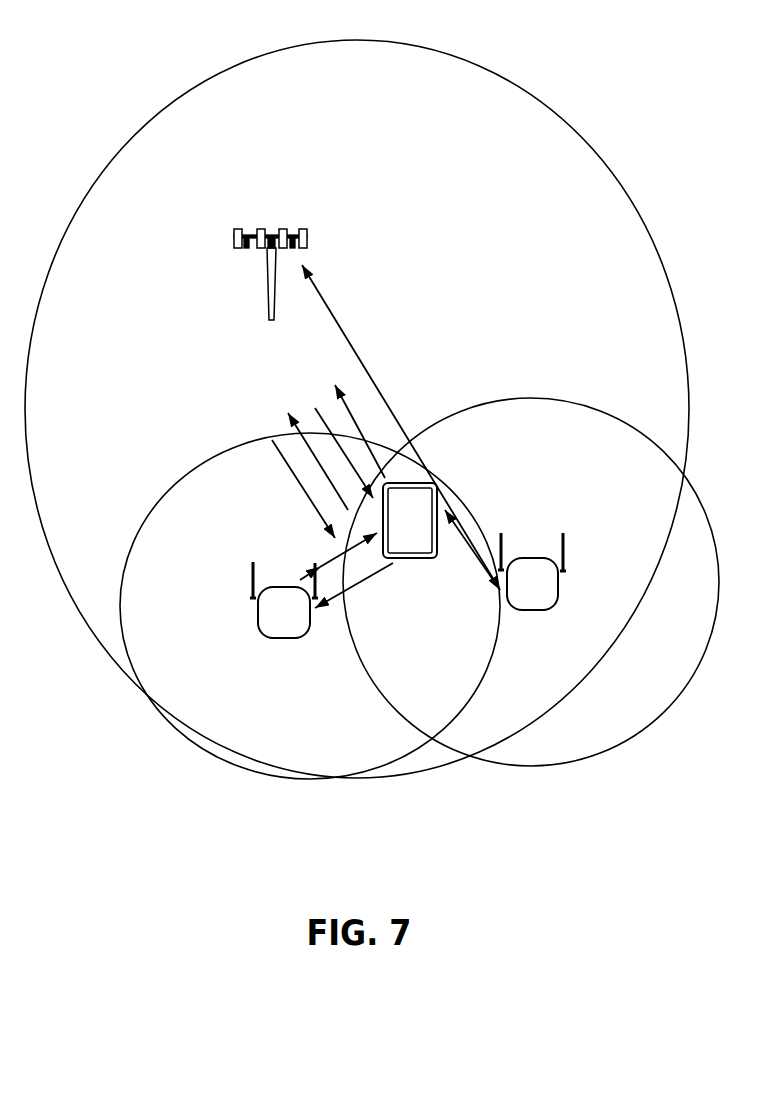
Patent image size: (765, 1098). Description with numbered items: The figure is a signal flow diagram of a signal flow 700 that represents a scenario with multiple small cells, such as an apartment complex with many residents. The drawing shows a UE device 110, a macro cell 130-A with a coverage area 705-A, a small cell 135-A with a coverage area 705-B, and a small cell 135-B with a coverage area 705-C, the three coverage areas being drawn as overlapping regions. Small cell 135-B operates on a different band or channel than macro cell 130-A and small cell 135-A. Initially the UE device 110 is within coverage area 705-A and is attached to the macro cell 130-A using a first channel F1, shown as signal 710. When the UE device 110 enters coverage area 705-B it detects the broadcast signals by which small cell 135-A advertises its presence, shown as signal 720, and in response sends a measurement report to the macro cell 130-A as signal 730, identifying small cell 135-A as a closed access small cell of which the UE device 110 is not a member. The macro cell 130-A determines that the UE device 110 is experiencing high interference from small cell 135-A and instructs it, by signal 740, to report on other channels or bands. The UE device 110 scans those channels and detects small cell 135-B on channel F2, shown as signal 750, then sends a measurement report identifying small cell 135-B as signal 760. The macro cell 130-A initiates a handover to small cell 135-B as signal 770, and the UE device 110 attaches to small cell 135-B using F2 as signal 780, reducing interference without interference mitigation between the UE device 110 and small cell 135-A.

The signal flow 700 is at (124, 44).
The UE device 110 is at (410, 559).
The macro cell 130-A is at (276, 318).
The small cell 135-A is at (531, 609).
The small cell 135-B is at (282, 637).
The coverage area 705-A is at (357, 449).
The coverage area 705-B is at (531, 608).
The coverage area 705-C is at (310, 633).
The signal 710 is at (401, 427).
The signal 720 is at (471, 550).
The signal 730 is at (358, 431).
The signal 740 is at (348, 453).
The signal 750 is at (338, 556).
The signal 760 is at (315, 461).
The signal 770 is at (303, 489).
The signal 780 is at (354, 585).